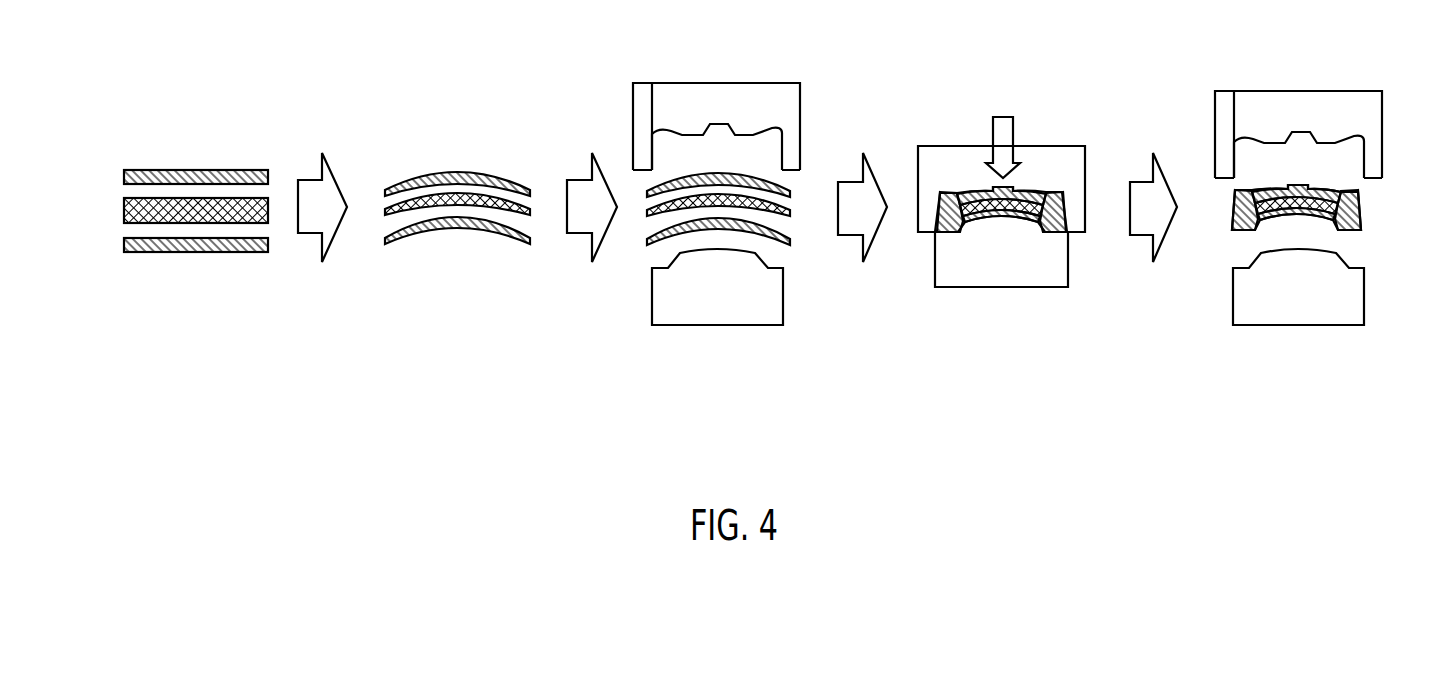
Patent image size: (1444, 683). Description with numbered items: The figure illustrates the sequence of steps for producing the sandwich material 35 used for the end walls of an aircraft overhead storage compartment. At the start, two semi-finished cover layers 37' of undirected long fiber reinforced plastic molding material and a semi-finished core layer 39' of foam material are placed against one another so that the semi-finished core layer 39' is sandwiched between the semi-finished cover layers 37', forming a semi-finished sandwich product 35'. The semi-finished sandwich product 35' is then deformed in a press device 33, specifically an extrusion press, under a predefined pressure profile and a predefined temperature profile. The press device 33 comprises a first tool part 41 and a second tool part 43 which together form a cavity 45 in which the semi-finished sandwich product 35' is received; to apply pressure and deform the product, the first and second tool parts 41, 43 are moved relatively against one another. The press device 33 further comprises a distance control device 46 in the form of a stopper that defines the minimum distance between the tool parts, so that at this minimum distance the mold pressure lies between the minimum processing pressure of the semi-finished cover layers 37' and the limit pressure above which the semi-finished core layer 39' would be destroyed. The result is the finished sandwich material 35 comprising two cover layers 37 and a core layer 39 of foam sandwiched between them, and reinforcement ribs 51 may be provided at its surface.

The semi-finished cover layer 37' is at (196, 213).
The semi-finished core layer 39' is at (170, 213).
The semi-finished sandwich product 35' is at (620, 170).
The press device 33 is at (668, 312).
The first tool part 41 is at (733, 118).
The cavity 45 is at (733, 163).
The distance control device 46 is at (793, 157).
The second tool part 43 is at (733, 305).
The cover layer 37 is at (1183, 211).
The core layer 39 is at (1149, 187).
The sandwich material 35 is at (1330, 215).
The reinforcement rib 51 is at (1245, 190).